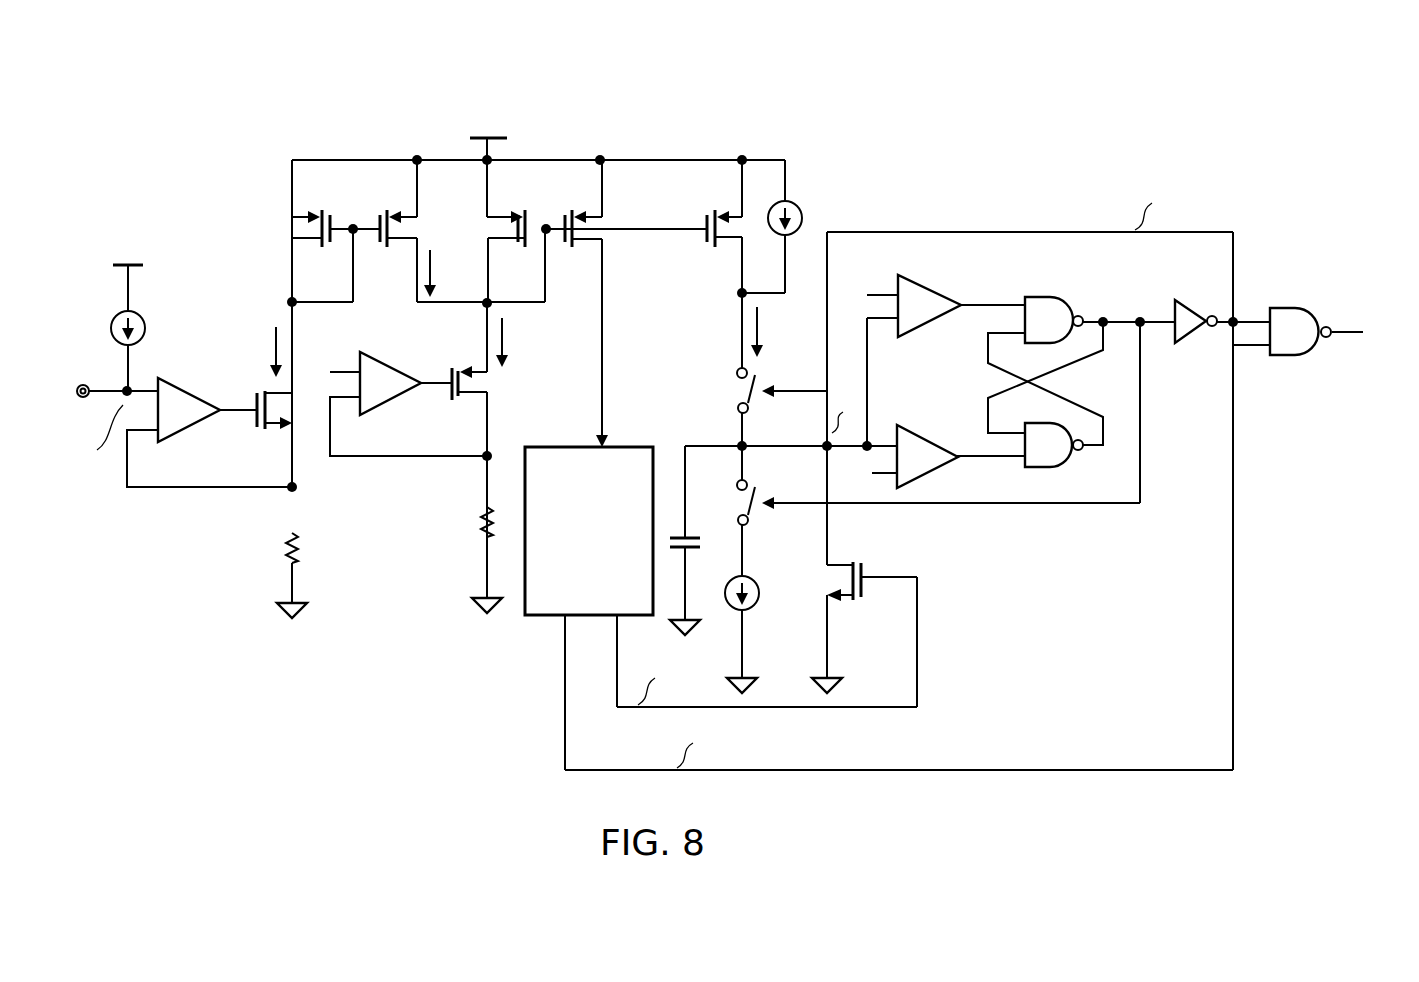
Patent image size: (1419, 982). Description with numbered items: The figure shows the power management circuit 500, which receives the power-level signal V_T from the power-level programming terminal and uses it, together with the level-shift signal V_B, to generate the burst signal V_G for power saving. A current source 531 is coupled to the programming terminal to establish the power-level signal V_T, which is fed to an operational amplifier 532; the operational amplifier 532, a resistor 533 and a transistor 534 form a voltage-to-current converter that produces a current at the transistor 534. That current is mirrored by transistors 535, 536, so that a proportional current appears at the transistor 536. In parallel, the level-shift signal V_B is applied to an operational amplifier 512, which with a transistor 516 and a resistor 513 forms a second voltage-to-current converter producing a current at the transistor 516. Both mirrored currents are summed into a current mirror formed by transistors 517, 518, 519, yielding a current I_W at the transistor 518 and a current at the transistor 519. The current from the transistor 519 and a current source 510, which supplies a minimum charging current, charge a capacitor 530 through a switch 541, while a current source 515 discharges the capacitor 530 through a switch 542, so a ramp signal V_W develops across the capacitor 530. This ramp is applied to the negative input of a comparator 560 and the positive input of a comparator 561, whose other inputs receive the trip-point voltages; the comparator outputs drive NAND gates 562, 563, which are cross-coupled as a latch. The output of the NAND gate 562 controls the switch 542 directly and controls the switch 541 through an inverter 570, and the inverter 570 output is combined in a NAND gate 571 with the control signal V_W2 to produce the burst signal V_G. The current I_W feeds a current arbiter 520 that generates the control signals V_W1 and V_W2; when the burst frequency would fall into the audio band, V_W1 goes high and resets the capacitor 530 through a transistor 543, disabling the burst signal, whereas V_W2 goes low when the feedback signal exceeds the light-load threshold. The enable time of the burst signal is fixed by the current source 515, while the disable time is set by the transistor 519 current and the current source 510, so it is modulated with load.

The power management circuit 500 is at (1380, 153).
The current source 510 is at (800, 197).
The operational amplifier 512 is at (402, 362).
The resistor 513 is at (477, 530).
The current source 515 is at (755, 607).
The transistor 516 is at (452, 405).
The transistor 517 is at (517, 252).
The transistor 518 is at (572, 252).
The transistor 519 is at (712, 255).
The current arbiter 520 is at (542, 620).
The capacitor 530 is at (693, 537).
The current source 531 is at (140, 310).
The operational amplifier 532 is at (188, 385).
The resistor 533 is at (278, 558).
The transistor 534 is at (265, 435).
The transistor 535 is at (320, 252).
The transistor 536 is at (388, 252).
The switch 541 is at (738, 395).
The switch 542 is at (757, 515).
The transistor 543 is at (853, 603).
The comparator 560 is at (938, 285).
The comparator 561 is at (932, 428).
The NAND gate 562 is at (1042, 293).
The NAND gate 563 is at (1047, 468).
The inverter 570 is at (1188, 338).
The NAND gate 571 is at (1287, 355).